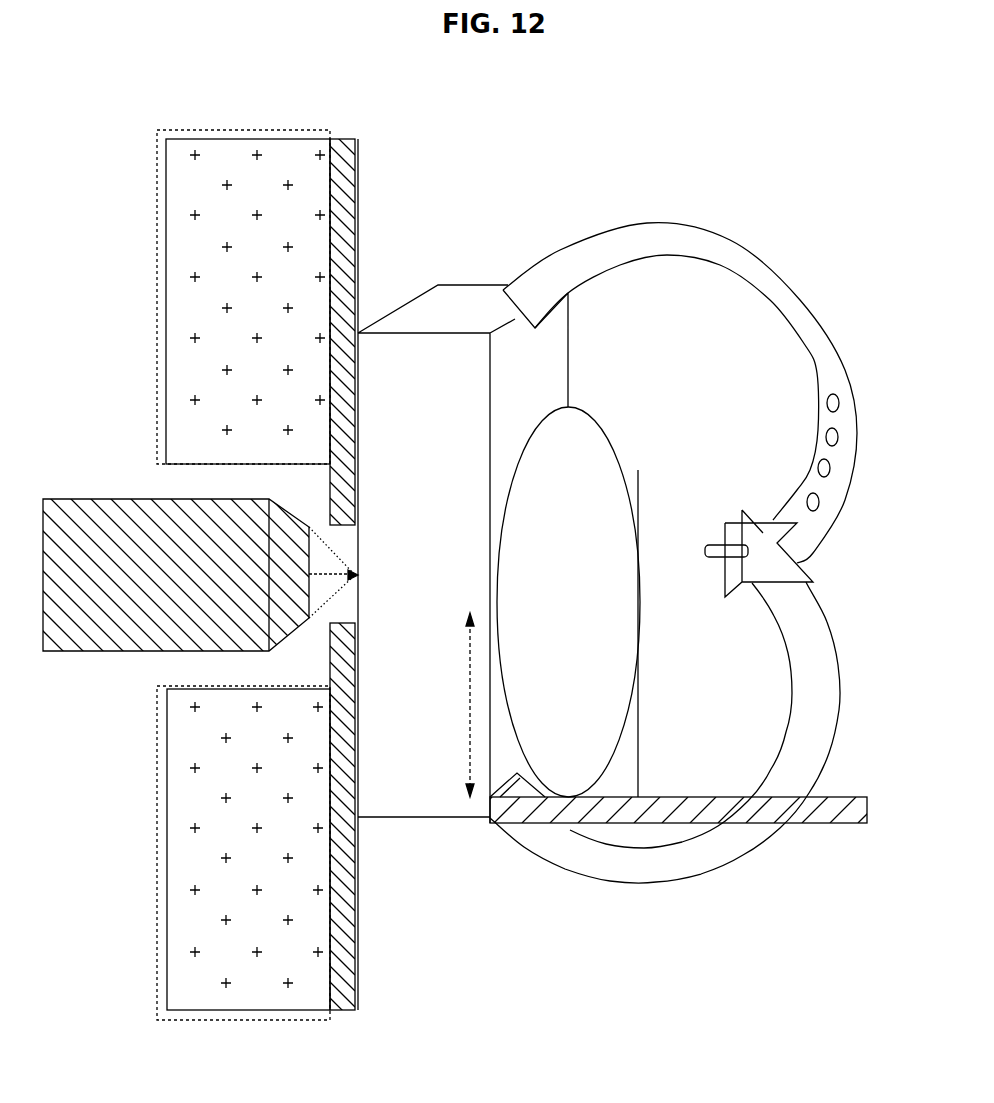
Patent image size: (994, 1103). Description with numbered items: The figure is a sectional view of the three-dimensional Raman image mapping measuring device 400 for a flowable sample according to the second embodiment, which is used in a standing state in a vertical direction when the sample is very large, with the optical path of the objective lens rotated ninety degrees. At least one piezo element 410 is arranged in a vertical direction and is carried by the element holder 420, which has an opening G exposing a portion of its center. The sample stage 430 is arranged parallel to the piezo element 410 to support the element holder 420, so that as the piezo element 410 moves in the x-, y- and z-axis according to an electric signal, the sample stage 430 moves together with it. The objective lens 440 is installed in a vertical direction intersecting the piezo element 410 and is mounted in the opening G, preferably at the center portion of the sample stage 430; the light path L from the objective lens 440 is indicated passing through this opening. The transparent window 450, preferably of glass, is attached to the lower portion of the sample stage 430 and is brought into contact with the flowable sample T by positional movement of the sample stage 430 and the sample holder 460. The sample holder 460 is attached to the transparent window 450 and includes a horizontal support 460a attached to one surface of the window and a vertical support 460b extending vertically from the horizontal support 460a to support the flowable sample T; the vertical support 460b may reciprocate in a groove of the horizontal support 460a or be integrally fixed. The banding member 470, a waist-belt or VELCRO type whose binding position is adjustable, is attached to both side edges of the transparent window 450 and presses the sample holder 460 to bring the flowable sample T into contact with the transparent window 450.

The three-dimensional Raman image mapping measuring device 400 is at (646, 473).
The piezo element 410 is at (165, 277).
The element holder 420 is at (245, 130).
The sample stage 430 is at (358, 207).
The objective lens 440 is at (63, 652).
The transparent window 450 is at (422, 818).
The sample holder 460 is at (675, 646).
The horizontal support 460a is at (650, 797).
The vertical support 460b is at (639, 710).
The banding member 470 is at (845, 370).
The flowable sample T is at (582, 445).
The light L is at (318, 548).
The opening G is at (183, 670).